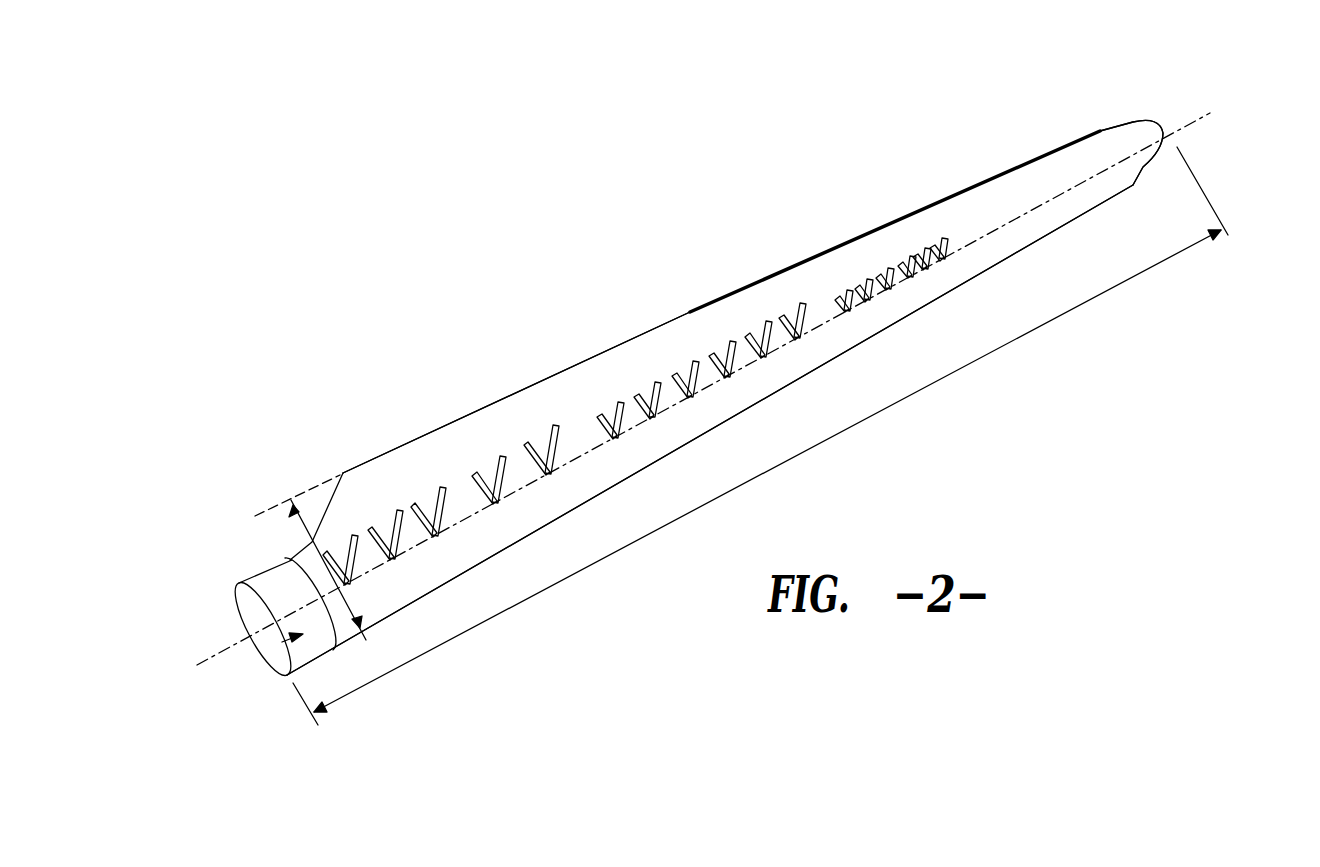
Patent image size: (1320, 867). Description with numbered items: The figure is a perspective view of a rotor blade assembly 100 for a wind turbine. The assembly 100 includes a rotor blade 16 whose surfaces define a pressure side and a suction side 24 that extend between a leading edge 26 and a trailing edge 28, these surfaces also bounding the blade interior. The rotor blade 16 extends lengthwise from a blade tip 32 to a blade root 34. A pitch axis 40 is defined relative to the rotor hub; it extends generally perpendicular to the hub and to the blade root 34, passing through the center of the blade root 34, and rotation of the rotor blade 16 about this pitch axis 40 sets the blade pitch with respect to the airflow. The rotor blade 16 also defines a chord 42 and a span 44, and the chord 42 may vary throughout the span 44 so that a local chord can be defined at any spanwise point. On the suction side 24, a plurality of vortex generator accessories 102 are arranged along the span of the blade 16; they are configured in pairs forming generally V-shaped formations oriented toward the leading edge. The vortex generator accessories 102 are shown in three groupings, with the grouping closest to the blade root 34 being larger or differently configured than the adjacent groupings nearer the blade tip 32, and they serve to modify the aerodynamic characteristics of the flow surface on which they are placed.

The rotor blade assembly 100 is at (540, 277).
The rotor blade 16 is at (508, 380).
The suction side 24 is at (435, 457).
The leading edge 26 is at (472, 570).
The trailing edge 28 is at (363, 462).
The blade tip 32 is at (1137, 127).
The blade root 34 is at (275, 670).
The pitch axis 40 is at (563, 463).
The chord 42 is at (293, 556).
The span 44 is at (792, 458).
The vortex generator accessories 102 is at (556, 418).